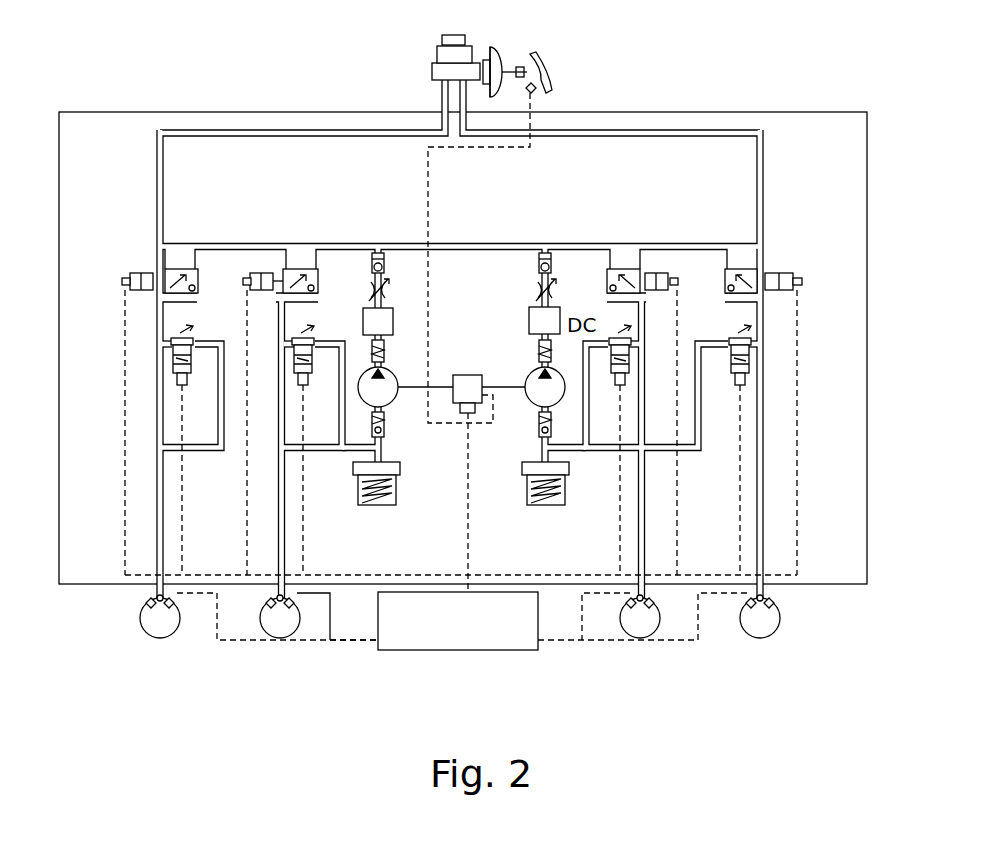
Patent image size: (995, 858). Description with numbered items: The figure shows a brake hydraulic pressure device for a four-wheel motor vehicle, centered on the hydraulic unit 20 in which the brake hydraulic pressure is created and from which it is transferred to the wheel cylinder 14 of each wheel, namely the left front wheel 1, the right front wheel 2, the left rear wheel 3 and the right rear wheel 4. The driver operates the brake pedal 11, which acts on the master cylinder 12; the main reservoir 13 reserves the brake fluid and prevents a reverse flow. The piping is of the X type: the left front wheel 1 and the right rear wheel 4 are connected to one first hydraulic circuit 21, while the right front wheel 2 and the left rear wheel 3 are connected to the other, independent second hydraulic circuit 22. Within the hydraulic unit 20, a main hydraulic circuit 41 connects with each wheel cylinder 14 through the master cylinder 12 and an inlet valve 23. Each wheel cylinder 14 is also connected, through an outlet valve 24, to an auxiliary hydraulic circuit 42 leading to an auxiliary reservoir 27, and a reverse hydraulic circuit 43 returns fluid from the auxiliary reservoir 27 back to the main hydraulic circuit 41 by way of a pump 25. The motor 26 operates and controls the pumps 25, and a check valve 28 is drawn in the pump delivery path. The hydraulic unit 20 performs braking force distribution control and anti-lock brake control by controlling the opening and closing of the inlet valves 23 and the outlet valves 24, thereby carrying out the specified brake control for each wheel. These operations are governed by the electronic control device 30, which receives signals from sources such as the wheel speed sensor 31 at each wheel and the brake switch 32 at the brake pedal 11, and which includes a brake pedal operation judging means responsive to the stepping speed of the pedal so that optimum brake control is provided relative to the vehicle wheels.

The left front wheel 1 is at (178, 622).
The right front wheel 2 is at (780, 622).
The left rear wheel 3 is at (658, 622).
The right rear wheel 4 is at (295, 626).
The brake pedal 11 is at (548, 64).
The master cylinder 12 is at (432, 78).
The main reservoir 13 is at (437, 52).
The wheel cylinder 14 is at (150, 606).
The hydraulic unit 20 is at (816, 112).
The first hydraulic circuit 21 is at (162, 128).
The second hydraulic circuit 22 is at (608, 129).
The inlet valve 23 is at (135, 272).
The outlet valve 24 is at (192, 338).
The pump 25 is at (530, 378).
The motor 26 is at (467, 375).
The auxiliary reservoir 27 is at (370, 506).
The check valve 28 is at (382, 255).
The electronic control device 30 is at (425, 650).
The wheel speed sensor 31 is at (152, 598).
The brake switch 32 is at (538, 90).
The main hydraulic circuit 41 is at (157, 172).
The auxiliary hydraulic circuit 42 is at (221, 445).
The reverse hydraulic circuit 43 is at (373, 293).